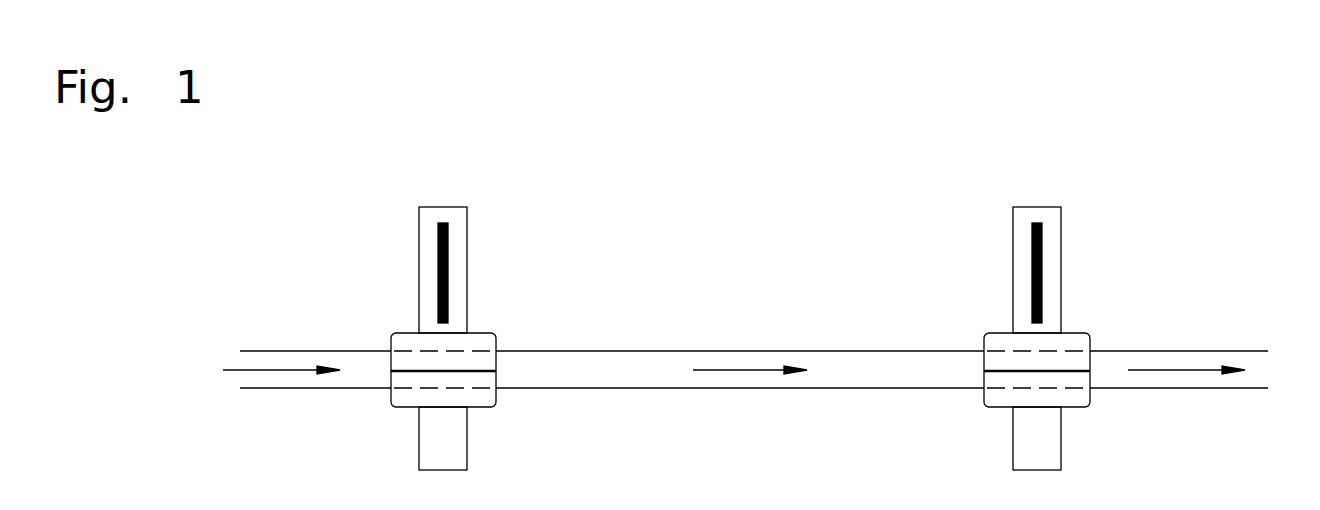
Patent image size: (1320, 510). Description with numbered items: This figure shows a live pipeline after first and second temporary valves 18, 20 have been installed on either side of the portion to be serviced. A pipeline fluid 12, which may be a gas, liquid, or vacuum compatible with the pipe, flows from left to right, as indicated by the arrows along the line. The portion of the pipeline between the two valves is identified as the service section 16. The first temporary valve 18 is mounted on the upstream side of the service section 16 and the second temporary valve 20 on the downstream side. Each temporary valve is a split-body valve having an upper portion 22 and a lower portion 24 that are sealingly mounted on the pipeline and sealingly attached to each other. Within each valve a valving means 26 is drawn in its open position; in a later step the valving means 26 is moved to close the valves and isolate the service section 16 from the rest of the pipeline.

The pipeline fluid 12 is at (673, 384).
The service section 16 is at (728, 440).
The first temporary valve 18 is at (467, 222).
The second temporary valve 20 is at (1061, 222).
The upper portion 22 is at (492, 331).
The lower portion 24 is at (478, 410).
The valving means 26 is at (448, 271).